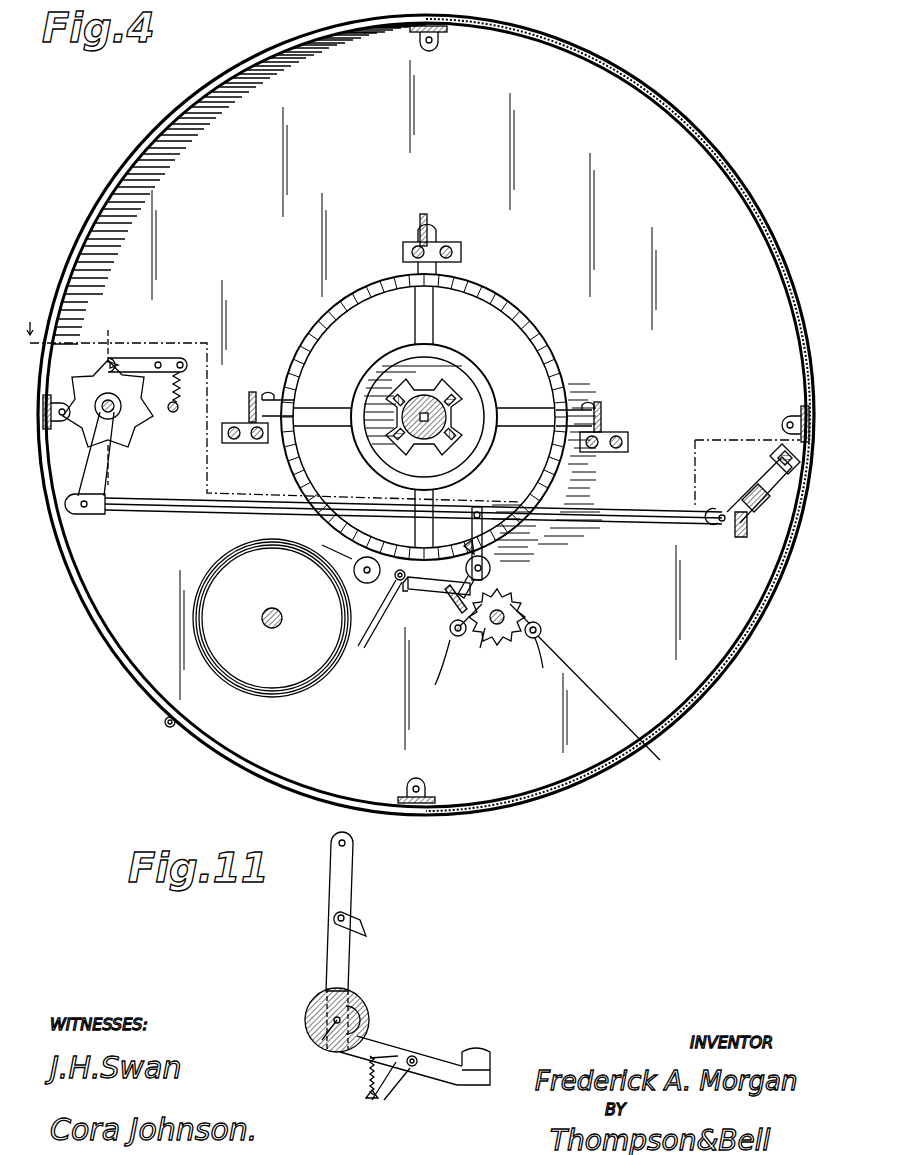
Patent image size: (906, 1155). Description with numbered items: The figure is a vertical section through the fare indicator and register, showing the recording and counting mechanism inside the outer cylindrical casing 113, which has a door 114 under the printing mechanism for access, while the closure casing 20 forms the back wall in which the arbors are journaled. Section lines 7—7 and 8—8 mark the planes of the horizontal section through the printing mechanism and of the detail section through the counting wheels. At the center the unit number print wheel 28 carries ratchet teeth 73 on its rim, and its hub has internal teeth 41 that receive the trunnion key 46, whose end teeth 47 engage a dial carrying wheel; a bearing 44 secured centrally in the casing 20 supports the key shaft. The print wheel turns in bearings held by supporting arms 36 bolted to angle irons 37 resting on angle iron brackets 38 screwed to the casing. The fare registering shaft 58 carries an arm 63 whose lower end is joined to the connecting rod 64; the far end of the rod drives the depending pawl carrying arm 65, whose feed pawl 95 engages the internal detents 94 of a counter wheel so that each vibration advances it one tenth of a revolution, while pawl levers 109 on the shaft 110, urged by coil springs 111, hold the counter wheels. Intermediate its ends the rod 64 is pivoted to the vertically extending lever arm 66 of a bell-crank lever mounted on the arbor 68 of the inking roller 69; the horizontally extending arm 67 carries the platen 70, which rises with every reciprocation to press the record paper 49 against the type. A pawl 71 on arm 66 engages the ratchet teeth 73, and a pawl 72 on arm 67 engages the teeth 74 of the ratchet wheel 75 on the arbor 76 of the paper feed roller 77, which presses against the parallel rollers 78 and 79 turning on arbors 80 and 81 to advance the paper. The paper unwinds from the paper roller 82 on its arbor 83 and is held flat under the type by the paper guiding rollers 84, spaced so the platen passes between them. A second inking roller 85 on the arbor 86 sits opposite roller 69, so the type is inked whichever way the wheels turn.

In FIG. 4, the section line 7— 7 is at (269, 412).
In FIG. 4, the section line 8— 8 is at (106, 405).
In FIG. 4, the closure casing 20 is at (655, 697).
In FIG. 4, the unit number print wheel 28 is at (447, 416).
In FIG. 4, the supporting arms 36 is at (268, 398).
In FIG. 4, the angle irons 37 is at (428, 232).
In FIG. 4, the angle iron brackets 38 is at (460, 254).
In FIG. 4, the teeth 41 is at (399, 437).
In FIG. 4, the bearing 44 is at (522, 608).
In FIG. 4, the trunnion key 46 is at (446, 417).
In FIG. 4, the end teeth 47 is at (440, 440).
In FIG. 4, the record paper 49 is at (408, 640).
In FIG. 4, the fare registering shaft 58 is at (782, 446).
In FIG. 4, the arm 63 is at (758, 490).
In FIG. 4, the connecting rod 64 is at (615, 520).
In FIG. 4, the pawl carrying arm 65 is at (95, 480).
In FIG. 4, the vertically extending lever arm 66 is at (472, 535).
In FIG. 11, the vertically extending lever arm 66 is at (328, 940).
In FIG. 4, the horizontally extending arm 67 is at (440, 592).
In FIG. 11, the horizontally extending arm 67 is at (440, 1070).
In FIG. 4, the arbor 68 is at (485, 582).
In FIG. 11, the arbor 68 is at (322, 1040).
In FIG. 4, the inking roller 69 is at (490, 566).
In FIG. 11, the inking roller 69 is at (360, 1005).
In FIG. 4, the platen 70 is at (400, 580).
In FIG. 11, the platen 70 is at (488, 1048).
In FIG. 4, the pawl 71 is at (462, 546).
In FIG. 11, the pawl 71 is at (366, 930).
In FIG. 4, the pawl 72 is at (455, 603).
In FIG. 11, the pawl 72 is at (372, 1102).
In FIG. 4, the ratchet teeth 73 is at (543, 345).
In FIG. 4, the teeth 74 is at (482, 650).
In FIG. 4, the ratchet wheel 75 is at (500, 625).
In FIG. 4, the arbor 76 is at (470, 642).
In FIG. 4, the paper feed roller 77 is at (525, 615).
In FIG. 4, the parallel roller 78 is at (541, 632).
In FIG. 4, the parallel roller 79 is at (458, 636).
In FIG. 4, the arbor 80 is at (546, 665).
In FIG. 4, the arbor 81 is at (440, 690).
In FIG. 4, the paper roller 82 is at (285, 636).
In FIG. 4, the arbor 83 is at (268, 630).
In FIG. 4, the paper guiding rollers 84 is at (392, 610).
In FIG. 4, the inking roller 85 is at (326, 543).
In FIG. 4, the arbor 86 is at (368, 583).
In FIG. 4, the internal detents 94 is at (125, 411).
In FIG. 4, the feed pawl 95 is at (118, 438).
In FIG. 4, the pawl levers 109 is at (140, 358).
In FIG. 4, the shaft 110 is at (168, 362).
In FIG. 4, the coil spring 111 is at (180, 392).
In FIG. 4, the outer cylindrical casing 113 is at (650, 750).
In FIG. 4, the door 114 is at (508, 808).